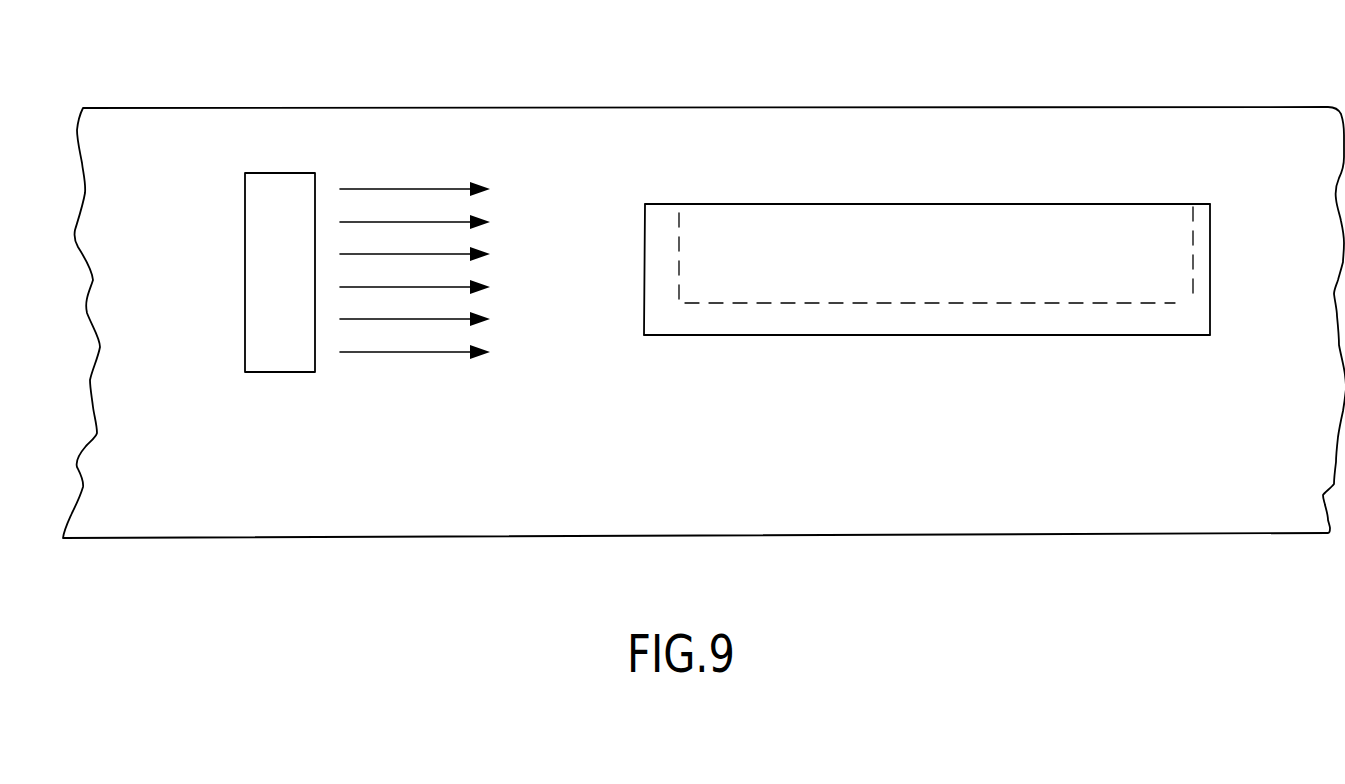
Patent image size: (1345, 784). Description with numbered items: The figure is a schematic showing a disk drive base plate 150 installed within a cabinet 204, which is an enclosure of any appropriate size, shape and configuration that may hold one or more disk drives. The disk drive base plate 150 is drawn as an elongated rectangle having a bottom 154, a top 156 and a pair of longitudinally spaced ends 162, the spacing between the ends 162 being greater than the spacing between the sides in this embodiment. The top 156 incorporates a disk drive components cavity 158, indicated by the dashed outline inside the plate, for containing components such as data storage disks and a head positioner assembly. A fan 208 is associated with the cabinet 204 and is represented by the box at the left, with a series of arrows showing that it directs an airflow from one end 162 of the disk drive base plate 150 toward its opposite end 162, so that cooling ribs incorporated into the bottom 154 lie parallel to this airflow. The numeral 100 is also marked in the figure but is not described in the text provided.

The cabinet 204 is at (667, 108).
The optical element 100 is at (917, 175).
The disk drive base plate 150 is at (992, 205).
The top 156 is at (768, 204).
The bottom 154 is at (693, 335).
The disk drive components cavity 158 is at (931, 264).
The ends 162 is at (645, 268).
The fan 208 is at (299, 286).